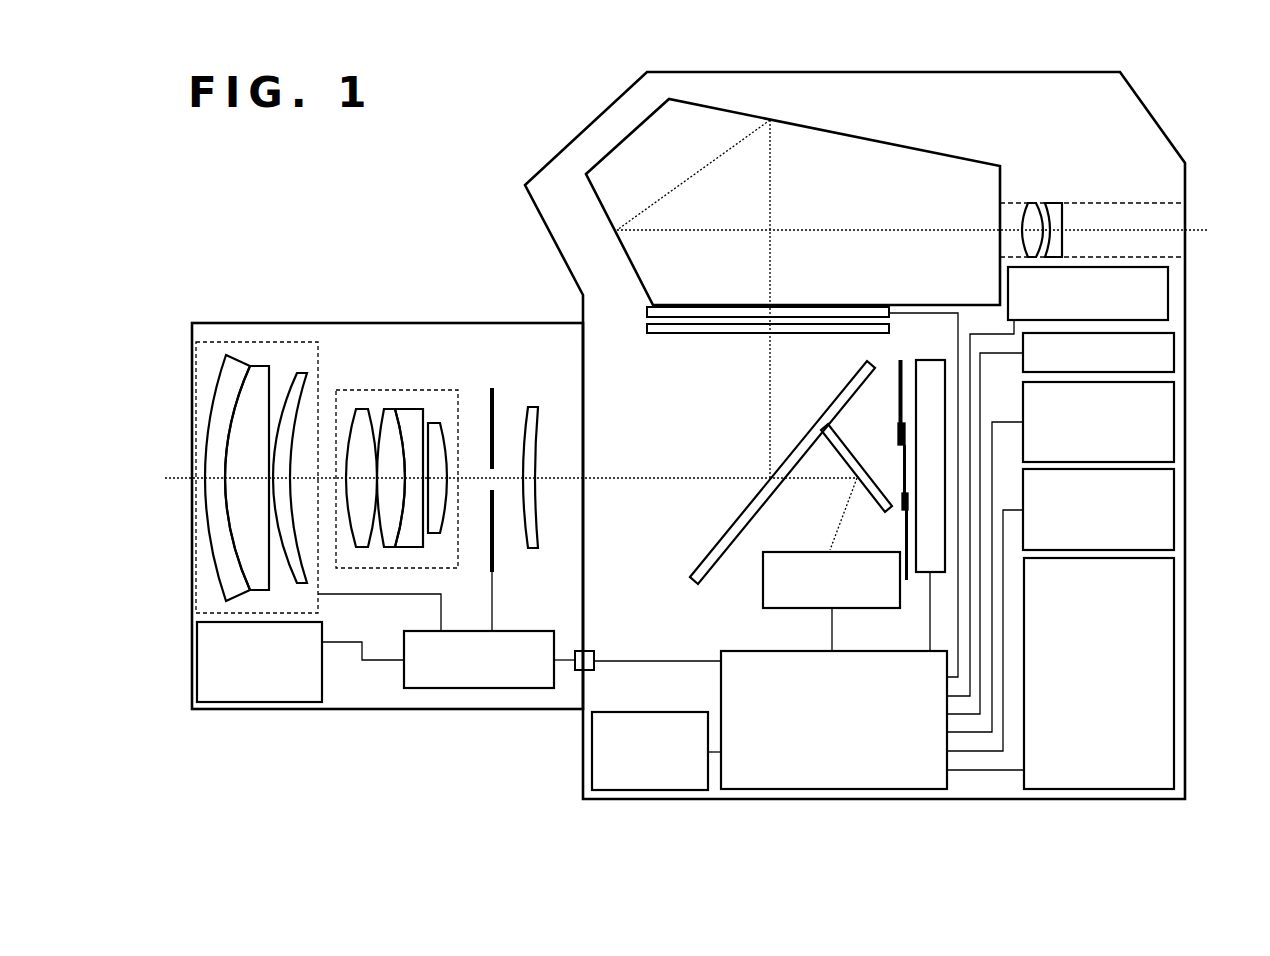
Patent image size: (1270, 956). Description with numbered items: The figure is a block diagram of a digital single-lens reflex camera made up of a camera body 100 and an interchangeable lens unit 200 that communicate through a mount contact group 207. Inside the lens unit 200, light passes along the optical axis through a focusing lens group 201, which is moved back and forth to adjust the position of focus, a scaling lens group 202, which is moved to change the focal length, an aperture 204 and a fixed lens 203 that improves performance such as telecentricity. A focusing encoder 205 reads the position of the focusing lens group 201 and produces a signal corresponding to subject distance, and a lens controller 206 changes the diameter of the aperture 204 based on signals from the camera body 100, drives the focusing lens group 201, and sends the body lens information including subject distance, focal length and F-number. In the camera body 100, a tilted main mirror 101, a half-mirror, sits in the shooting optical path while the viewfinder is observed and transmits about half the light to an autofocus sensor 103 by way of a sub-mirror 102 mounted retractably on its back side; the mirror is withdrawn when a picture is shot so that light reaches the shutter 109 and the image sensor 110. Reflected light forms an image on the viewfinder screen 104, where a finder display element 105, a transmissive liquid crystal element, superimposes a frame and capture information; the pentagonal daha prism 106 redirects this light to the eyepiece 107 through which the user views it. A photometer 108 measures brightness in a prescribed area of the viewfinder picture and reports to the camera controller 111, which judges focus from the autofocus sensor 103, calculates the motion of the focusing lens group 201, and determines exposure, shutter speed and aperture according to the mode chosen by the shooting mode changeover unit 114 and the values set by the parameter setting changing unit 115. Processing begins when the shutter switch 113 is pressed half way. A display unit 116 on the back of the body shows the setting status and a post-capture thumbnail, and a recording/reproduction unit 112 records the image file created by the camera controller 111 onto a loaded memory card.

The camera body 100 is at (588, 126).
The main mirror 101 is at (690, 578).
The sub-mirror 102 is at (852, 453).
The autofocus sensor 103 is at (799, 552).
The viewfinder screen 104 is at (670, 334).
The finder display element 105 is at (646, 308).
The pentagonal daha prism 106 is at (889, 142).
The eyepiece 107 is at (1111, 202).
The photometer 108 is at (1168, 295).
The shutter 109 is at (896, 365).
The image sensor 110 is at (930, 360).
The camera controller 111 is at (738, 651).
The recording/reproduction unit 112 is at (649, 712).
The shutter switch 113 is at (1174, 351).
The shooting mode changeover unit 114 is at (1174, 421).
The parameter setting changing unit 115 is at (1174, 505).
The display unit 116 is at (1174, 667).
The interchangeable lens unit 200 is at (218, 323).
The focusing lens group 201 is at (283, 342).
The scaling lens group 202 is at (396, 390).
The fixed lens 203 is at (536, 407).
The aperture 204 is at (492, 388).
The focusing encoder 205 is at (324, 672).
The lens controller 206 is at (528, 631).
The mount contact group 207 is at (596, 650).